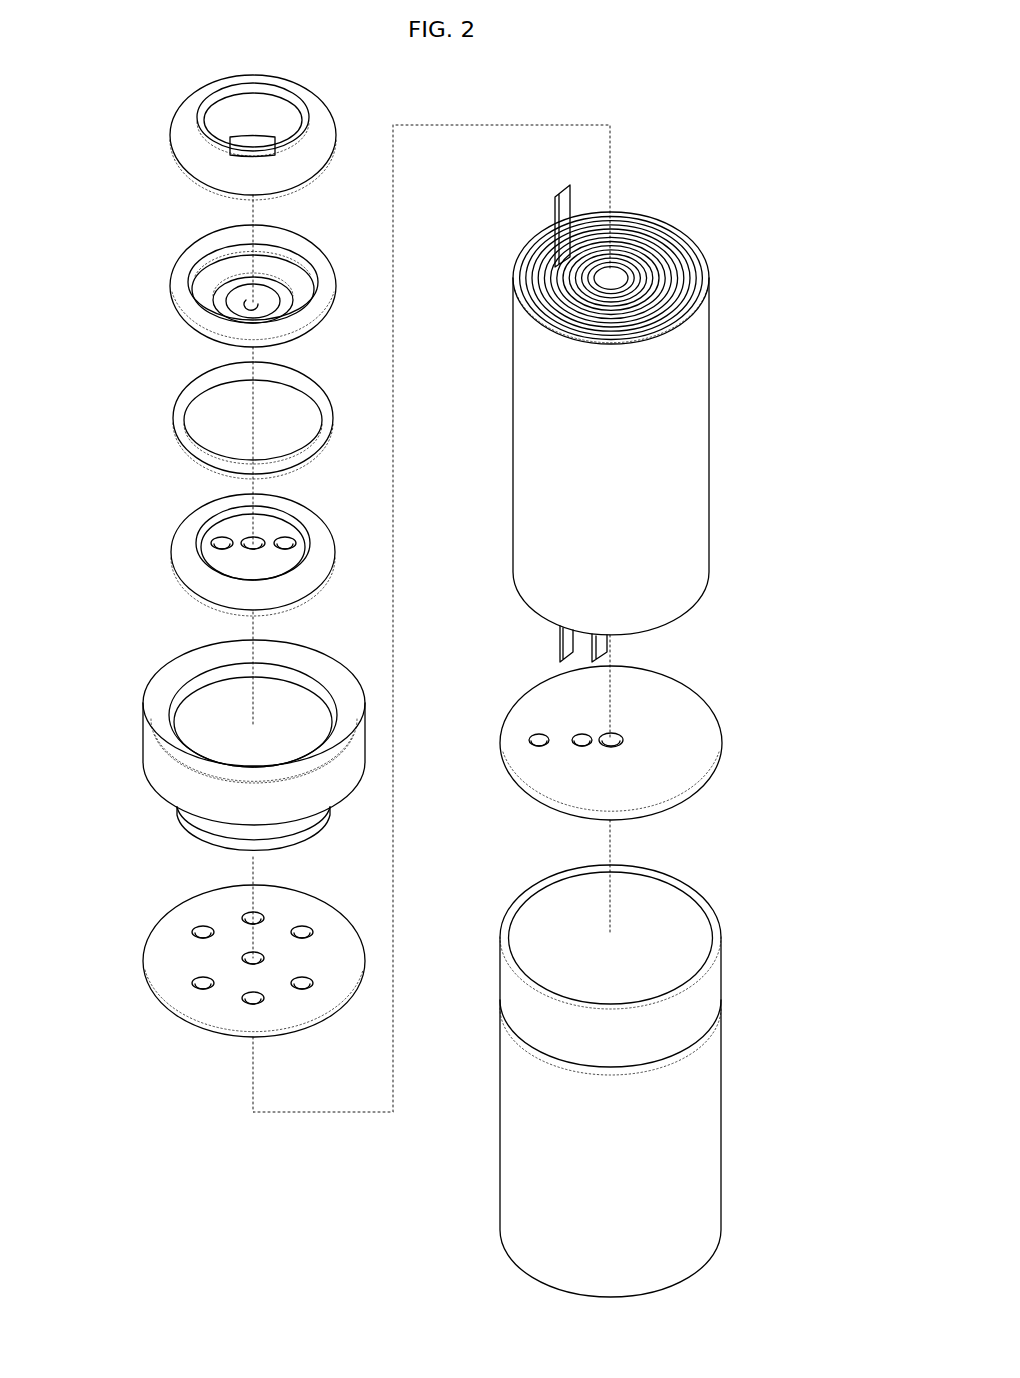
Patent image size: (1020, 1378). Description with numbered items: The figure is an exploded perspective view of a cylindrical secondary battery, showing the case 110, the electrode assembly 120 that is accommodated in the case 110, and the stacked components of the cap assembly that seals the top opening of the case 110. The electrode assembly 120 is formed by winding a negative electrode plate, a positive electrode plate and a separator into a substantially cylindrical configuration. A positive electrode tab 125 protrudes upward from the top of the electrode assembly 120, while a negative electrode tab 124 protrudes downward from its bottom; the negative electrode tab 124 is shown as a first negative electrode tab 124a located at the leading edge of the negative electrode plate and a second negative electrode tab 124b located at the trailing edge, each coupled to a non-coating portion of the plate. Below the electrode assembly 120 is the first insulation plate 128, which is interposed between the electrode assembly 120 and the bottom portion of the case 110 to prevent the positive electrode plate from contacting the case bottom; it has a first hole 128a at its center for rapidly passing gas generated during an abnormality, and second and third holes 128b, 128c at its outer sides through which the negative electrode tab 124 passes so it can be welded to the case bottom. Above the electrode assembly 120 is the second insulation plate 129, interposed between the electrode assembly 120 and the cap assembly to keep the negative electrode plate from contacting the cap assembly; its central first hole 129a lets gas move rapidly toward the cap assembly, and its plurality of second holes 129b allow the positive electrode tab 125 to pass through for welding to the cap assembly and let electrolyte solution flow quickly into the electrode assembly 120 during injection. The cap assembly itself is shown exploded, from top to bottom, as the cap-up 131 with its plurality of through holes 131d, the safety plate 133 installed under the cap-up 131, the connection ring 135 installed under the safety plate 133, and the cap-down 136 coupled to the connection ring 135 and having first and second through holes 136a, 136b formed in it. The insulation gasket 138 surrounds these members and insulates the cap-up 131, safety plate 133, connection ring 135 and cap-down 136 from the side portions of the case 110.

The case 110 is at (722, 1127).
The electrode assembly 120 is at (606, 415).
The negative electrode tab 124 is at (503, 650).
The first negative electrode tab 124a is at (592, 648).
The second negative electrode tab 124b is at (560, 634).
The positive electrode tab 125 is at (557, 190).
The first insulation plate 128 is at (619, 767).
The first hole 128a is at (615, 728).
The second hole 128b is at (584, 748).
The third hole 128c is at (540, 748).
The second insulation plate 129 is at (202, 947).
The first hole 129a is at (248, 957).
The second holes 129b is at (205, 922).
The cap-up 131 is at (220, 112).
The through holes 131d is at (232, 160).
The safety plate 133 is at (182, 278).
The connection ring 135 is at (180, 418).
The cap-down 136 is at (201, 546).
The first through hole 136a is at (250, 536).
The second through hole 136b is at (216, 538).
The insulation gasket 138 is at (143, 750).